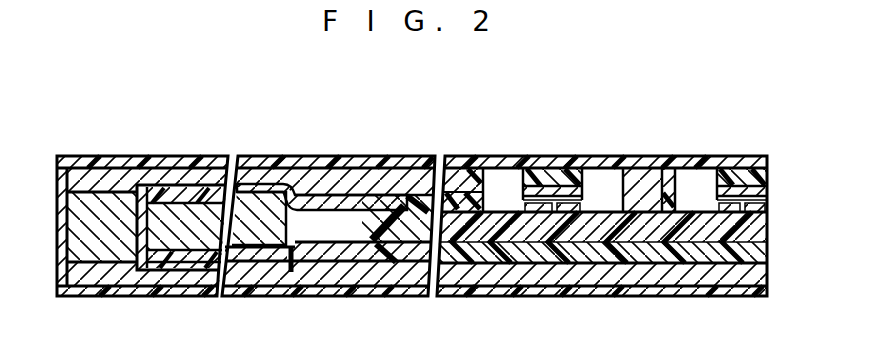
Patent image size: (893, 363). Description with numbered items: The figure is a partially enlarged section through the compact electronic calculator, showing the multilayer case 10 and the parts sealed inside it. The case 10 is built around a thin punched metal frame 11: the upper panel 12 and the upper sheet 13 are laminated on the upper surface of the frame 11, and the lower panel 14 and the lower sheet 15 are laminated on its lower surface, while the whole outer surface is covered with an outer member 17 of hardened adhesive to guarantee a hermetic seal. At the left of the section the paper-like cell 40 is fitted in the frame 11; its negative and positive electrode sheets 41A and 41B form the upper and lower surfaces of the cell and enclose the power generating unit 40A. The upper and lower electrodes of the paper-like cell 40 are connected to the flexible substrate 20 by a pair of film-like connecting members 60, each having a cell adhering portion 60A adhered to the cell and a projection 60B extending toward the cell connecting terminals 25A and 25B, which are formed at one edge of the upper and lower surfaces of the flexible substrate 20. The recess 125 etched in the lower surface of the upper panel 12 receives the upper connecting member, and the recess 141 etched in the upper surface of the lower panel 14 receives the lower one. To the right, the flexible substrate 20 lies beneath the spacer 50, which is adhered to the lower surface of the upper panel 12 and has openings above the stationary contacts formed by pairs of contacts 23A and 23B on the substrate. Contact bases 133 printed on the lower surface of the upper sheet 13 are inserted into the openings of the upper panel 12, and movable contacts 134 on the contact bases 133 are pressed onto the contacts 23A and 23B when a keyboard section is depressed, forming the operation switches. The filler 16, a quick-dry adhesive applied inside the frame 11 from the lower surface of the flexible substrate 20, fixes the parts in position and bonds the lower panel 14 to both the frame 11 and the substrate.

The case 10 is at (93, 152).
The frame 11 is at (83, 203).
The recess 125 is at (133, 190).
The negative electrode sheet 41A is at (173, 193).
The cell adhering portion 60A is at (210, 187).
The power generating unit 40A is at (252, 213).
The film-like connecting member 60 is at (295, 193).
The projection 60B is at (327, 197).
The upper sheet 13 is at (387, 190).
The cell connecting terminal 25A is at (392, 218).
The upper panel 12 is at (410, 180).
The spacer 50 is at (462, 183).
The contact 23A is at (518, 200).
The contact base 133 is at (537, 177).
The movable contact 134 is at (560, 187).
The contact 23B is at (585, 203).
The outer member 17 is at (63, 262).
The paper-like cell 40 is at (140, 233).
The positive electrode sheet 41B is at (167, 267).
The recess 141 is at (240, 268).
The lower sheet 15 is at (387, 294).
The lower panel 14 is at (405, 280).
The cell connecting terminal 25B is at (395, 248).
The flexible substrate 20 is at (540, 237).
The filler 16 is at (652, 272).